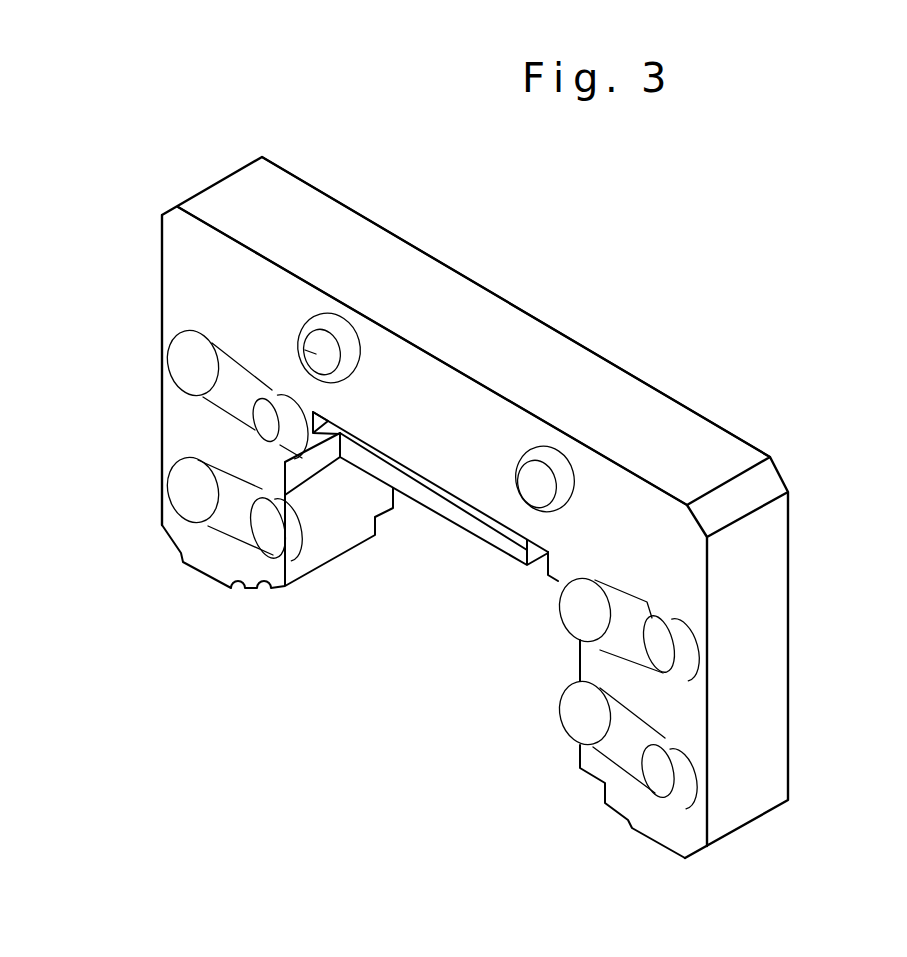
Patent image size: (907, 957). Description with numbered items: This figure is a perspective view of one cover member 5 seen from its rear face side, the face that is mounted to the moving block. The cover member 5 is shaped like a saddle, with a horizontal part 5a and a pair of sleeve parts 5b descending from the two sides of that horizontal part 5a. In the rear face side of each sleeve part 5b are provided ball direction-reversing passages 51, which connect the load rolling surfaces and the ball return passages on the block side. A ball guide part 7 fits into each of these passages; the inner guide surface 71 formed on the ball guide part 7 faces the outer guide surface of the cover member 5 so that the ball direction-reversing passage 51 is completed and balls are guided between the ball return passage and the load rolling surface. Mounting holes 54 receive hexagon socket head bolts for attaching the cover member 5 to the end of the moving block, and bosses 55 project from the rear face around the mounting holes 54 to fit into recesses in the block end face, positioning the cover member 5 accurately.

The cover member 5 is at (513, 290).
The horizontal part 5a is at (583, 367).
The sleeve part 5b is at (186, 546).
The ball guide part 7 is at (228, 357).
The ball direction-reversing passage 51 is at (181, 353).
The mounting hole 54 is at (316, 352).
The boss 55 is at (318, 323).
The inner guide surface 71 is at (263, 425).